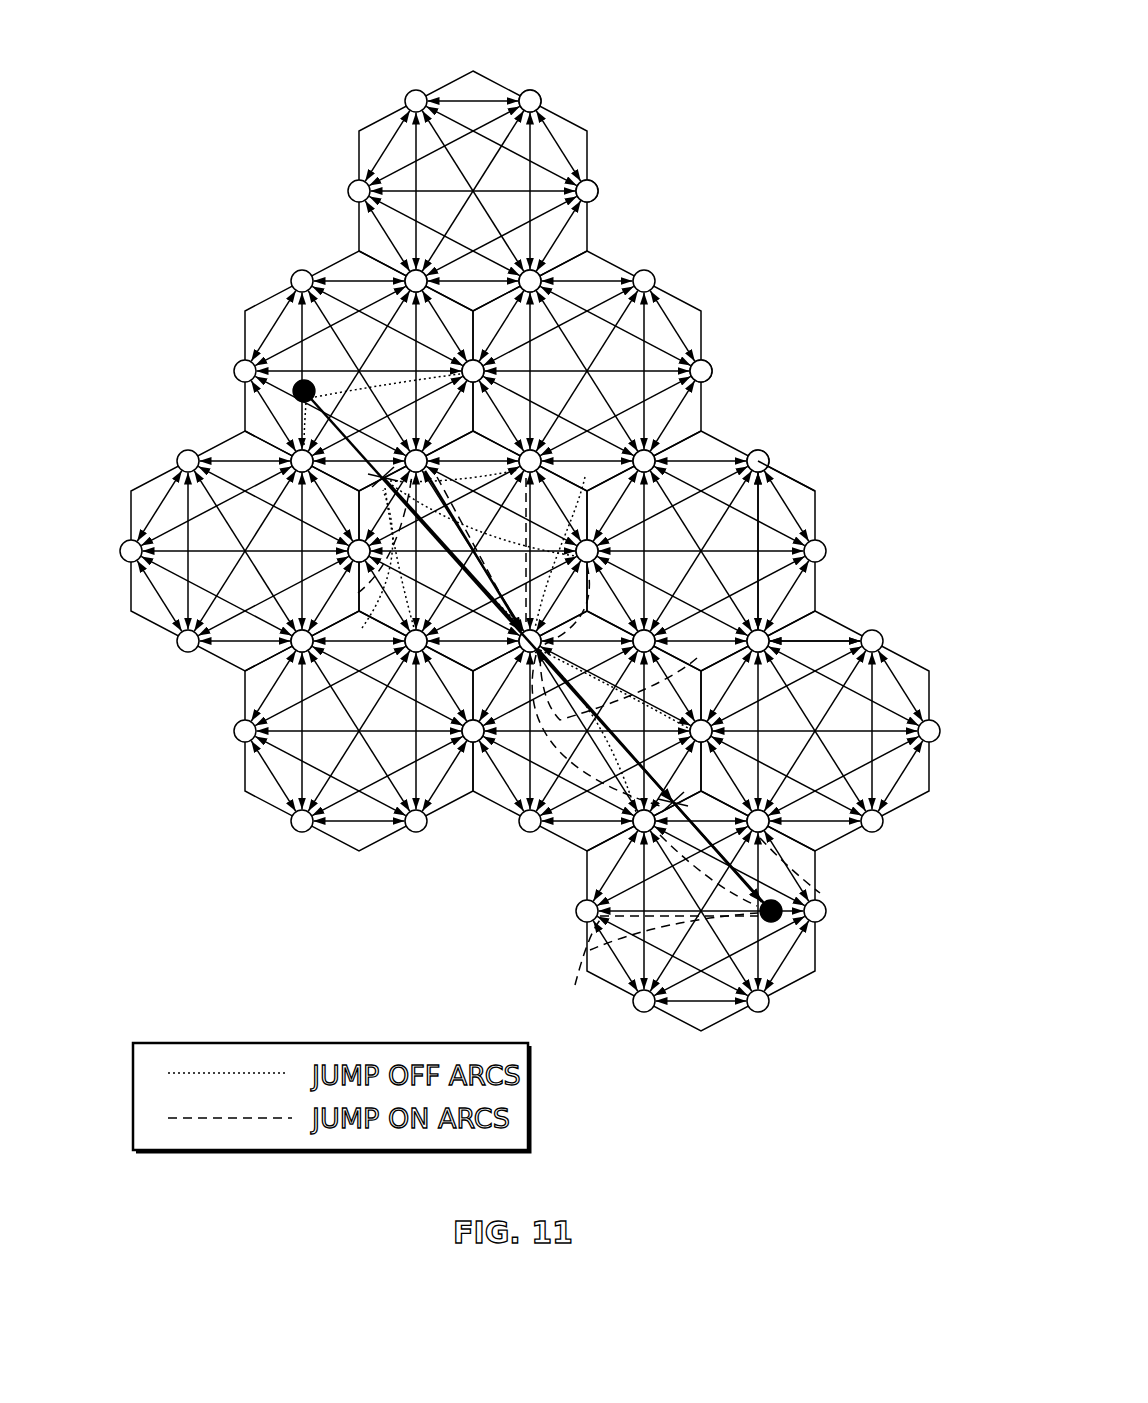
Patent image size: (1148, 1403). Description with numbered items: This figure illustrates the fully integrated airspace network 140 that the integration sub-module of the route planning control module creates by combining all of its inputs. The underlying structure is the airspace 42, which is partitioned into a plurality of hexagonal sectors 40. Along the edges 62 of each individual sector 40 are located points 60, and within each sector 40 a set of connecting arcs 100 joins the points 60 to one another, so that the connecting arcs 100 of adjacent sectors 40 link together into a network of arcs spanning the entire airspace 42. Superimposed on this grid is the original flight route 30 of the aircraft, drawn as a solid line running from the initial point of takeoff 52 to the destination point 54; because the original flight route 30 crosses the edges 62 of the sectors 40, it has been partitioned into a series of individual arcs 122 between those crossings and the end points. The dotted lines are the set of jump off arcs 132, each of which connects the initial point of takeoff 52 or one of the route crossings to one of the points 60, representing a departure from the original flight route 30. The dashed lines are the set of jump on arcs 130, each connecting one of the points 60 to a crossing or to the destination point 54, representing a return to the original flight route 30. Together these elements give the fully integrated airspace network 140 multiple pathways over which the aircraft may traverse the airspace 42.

The airspace 42 is at (765, 30).
The fully integrated airspace network 140 is at (630, 138).
The sector 40 is at (579, 123).
The point 60 is at (540, 93).
The edge 62 is at (801, 484).
The connecting arc 100 is at (762, 504).
The original flight route 30 is at (357, 452).
The initial point of takeoff 52 is at (302, 380).
The destination point 54 is at (776, 925).
The individual arc 122 is at (372, 480).
The jump on arc 130 is at (507, 479).
The jump off arc 132 is at (297, 430).